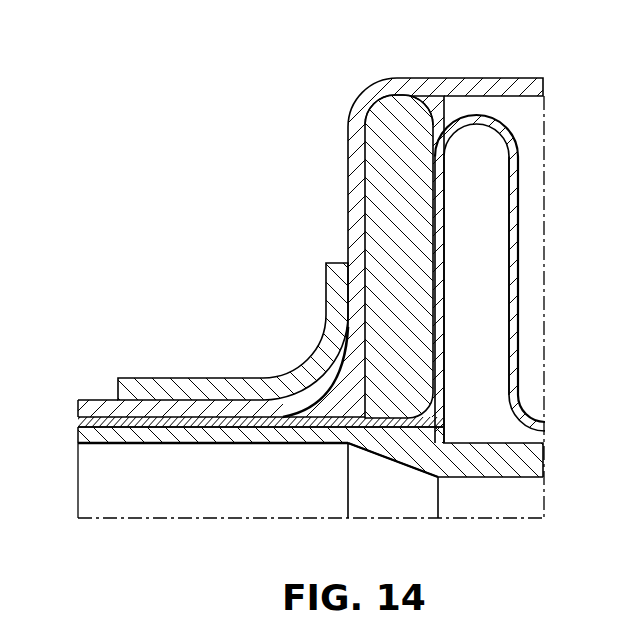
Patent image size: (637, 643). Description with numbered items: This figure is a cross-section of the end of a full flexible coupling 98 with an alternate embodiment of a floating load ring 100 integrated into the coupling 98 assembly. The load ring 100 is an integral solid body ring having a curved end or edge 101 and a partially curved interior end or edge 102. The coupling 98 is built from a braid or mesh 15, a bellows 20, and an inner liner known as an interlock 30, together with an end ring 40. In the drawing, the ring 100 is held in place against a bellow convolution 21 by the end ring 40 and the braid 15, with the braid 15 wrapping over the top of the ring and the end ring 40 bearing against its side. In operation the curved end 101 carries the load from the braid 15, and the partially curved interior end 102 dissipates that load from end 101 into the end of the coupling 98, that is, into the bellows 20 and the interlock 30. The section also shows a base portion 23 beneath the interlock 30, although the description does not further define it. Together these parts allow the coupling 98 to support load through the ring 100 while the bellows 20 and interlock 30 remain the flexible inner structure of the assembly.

The braid 15 is at (93, 407).
The bellows 20 is at (479, 123).
The bellow convolution 21 is at (438, 288).
The base plate 23 is at (312, 422).
The interlock 30 is at (82, 432).
The end ring 40 is at (178, 386).
The flexible coupling 98 is at (312, 150).
The floating load ring 100 is at (365, 226).
The curved end 101 is at (397, 98).
The partially curved interior end 102 is at (373, 428).